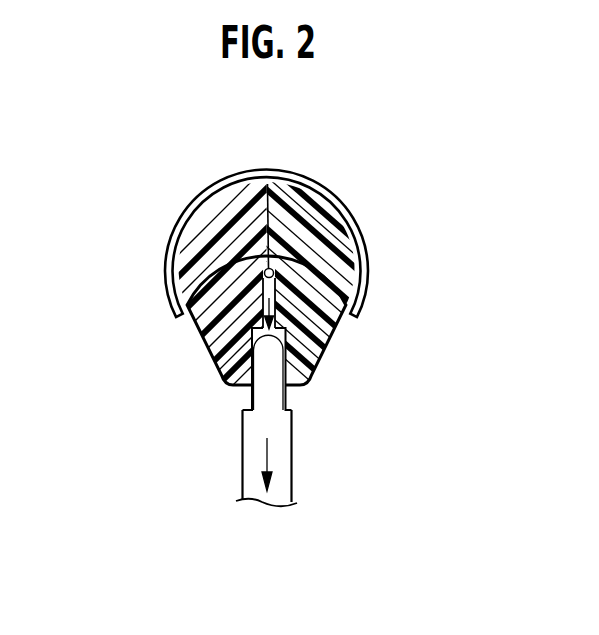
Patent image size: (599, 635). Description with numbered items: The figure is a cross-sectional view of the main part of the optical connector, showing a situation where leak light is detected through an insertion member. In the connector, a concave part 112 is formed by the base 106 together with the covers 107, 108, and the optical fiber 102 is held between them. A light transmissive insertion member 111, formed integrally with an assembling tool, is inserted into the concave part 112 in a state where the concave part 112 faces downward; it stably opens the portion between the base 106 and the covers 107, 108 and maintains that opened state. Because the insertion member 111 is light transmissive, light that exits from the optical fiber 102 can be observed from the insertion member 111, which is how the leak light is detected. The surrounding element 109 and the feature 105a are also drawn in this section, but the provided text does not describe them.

The optical fiber 102 is at (264, 273).
The communication passage 105a is at (275, 271).
The base 106 is at (308, 350).
The cover 107 is at (226, 250).
The cover 108 is at (219, 353).
The cover ring 109 is at (303, 171).
The insertion member 111 is at (285, 457).
The concave part 112 is at (279, 372).